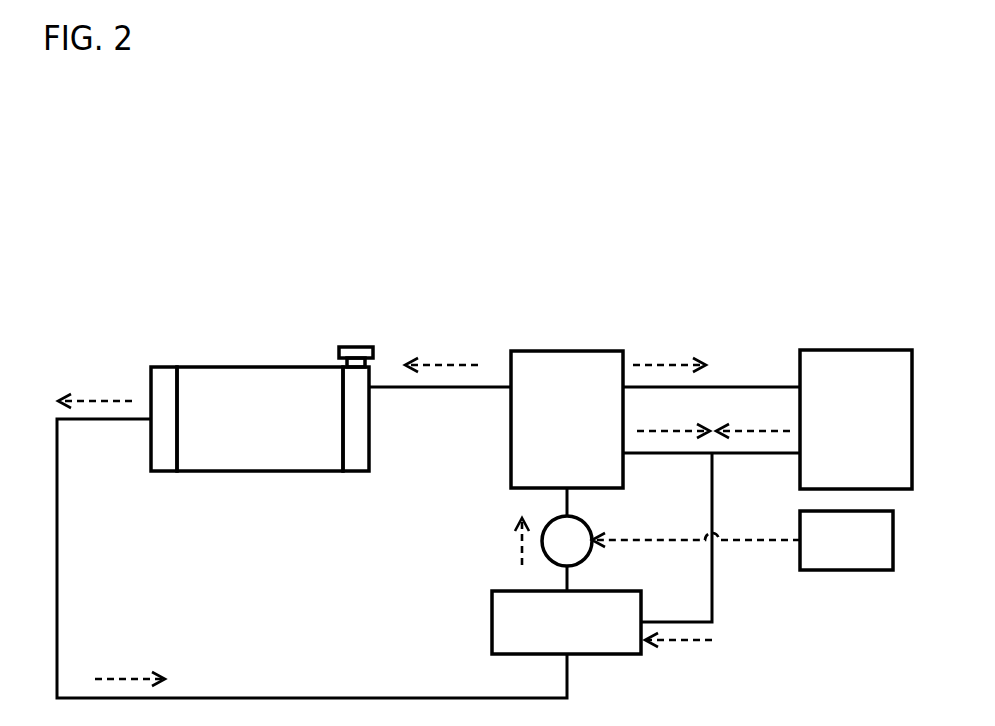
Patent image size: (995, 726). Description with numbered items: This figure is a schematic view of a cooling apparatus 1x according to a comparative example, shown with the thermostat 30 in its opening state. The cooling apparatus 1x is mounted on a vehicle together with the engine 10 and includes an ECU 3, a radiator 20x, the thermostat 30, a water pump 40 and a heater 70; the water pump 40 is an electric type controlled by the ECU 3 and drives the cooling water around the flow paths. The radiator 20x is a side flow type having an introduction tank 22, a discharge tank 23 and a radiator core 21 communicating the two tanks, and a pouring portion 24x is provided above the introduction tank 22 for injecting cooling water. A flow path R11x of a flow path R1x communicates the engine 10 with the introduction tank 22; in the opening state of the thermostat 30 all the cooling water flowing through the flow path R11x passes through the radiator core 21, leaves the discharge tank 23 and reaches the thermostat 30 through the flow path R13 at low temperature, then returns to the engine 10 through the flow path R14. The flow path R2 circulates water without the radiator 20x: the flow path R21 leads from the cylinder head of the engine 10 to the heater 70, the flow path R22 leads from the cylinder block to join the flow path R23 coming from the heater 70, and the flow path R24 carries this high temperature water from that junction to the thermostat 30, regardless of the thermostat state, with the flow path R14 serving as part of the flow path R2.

The cooling apparatus 1x is at (897, 302).
The engine 10 is at (617, 349).
The radiator 20x is at (311, 360).
The radiator core 21 is at (230, 380).
The introduction tank 22 is at (370, 450).
The discharge tank 23 is at (150, 373).
The pouring portion 24x is at (358, 345).
The thermostat 30 is at (642, 602).
The water pump 40 is at (592, 562).
The heater 70 is at (912, 373).
The Electronic Control Unit (ECU) 3 is at (893, 535).
The flow path R1x is at (435, 310).
The flow path R11x is at (463, 390).
The flow path R13 is at (380, 698).
The flow path R14 is at (570, 505).
The flow path R2 is at (795, 318).
The flow path R21 is at (763, 385).
The flow path R22 is at (682, 457).
The flow path R23 is at (762, 457).
The flow path R24 is at (713, 598).